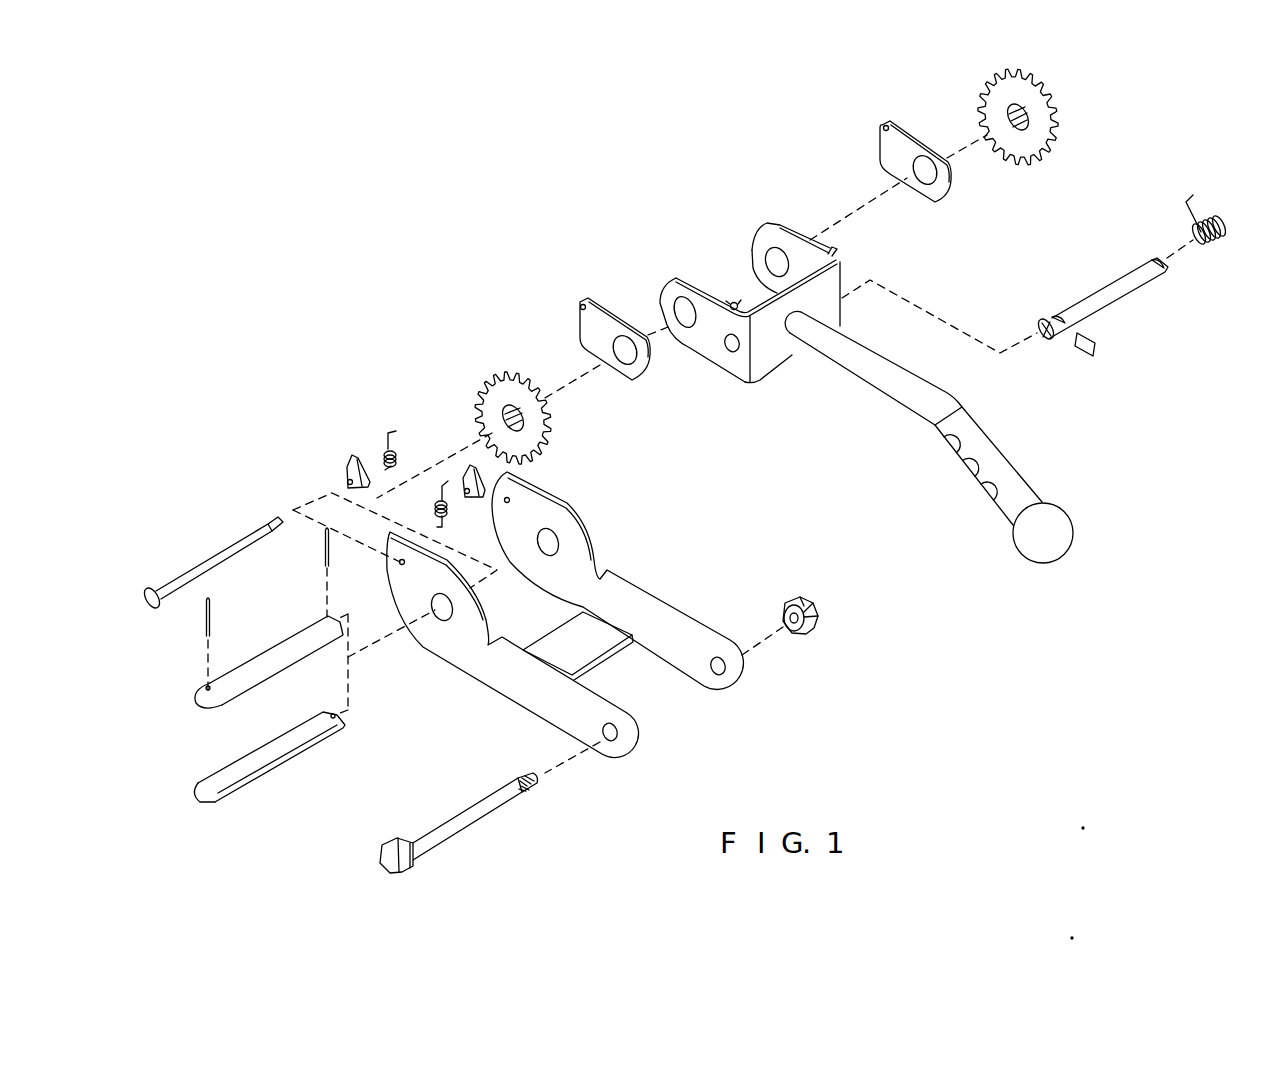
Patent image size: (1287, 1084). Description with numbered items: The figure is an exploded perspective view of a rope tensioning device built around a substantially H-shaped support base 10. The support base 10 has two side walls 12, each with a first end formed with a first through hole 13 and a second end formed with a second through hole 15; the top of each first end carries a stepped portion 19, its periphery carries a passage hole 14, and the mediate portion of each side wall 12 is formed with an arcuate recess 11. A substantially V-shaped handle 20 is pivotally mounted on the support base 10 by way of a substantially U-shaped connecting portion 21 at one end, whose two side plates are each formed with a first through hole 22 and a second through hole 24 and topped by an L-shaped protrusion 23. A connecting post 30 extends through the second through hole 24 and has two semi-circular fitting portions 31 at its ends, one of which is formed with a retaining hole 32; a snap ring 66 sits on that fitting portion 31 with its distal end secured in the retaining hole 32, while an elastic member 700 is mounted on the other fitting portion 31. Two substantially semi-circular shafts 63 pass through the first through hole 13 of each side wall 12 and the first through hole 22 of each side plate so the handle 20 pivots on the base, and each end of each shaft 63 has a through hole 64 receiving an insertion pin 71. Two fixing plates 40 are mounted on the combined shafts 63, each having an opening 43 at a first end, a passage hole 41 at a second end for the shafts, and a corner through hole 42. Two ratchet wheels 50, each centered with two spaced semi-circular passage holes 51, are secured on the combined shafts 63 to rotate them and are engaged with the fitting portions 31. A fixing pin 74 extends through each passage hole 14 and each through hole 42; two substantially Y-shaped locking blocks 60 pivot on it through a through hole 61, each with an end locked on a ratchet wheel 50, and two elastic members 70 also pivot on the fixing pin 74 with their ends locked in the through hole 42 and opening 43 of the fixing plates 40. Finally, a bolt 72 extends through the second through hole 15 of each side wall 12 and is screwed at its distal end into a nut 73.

The support base 10 is at (574, 613).
The arcuate recess 11 is at (494, 645).
The side walls 12 is at (645, 581).
The first through hole 13 is at (443, 616).
The passage hole 14 is at (400, 565).
The second through hole 15 is at (724, 668).
The stepped portion 19 is at (552, 503).
The handle 20 is at (853, 428).
The connecting portion 21 is at (742, 297).
The first through hole 22 is at (683, 302).
The L-shaped protrusion 23 is at (731, 303).
The second through hole 24 is at (730, 353).
The connecting post 30 is at (1095, 327).
The semi-circular fitting portions 31 is at (1041, 324).
The retaining hole 32 is at (1047, 340).
The fixing plates 40 is at (724, 250).
The passage hole 41 is at (626, 348).
The through hole 42 is at (582, 307).
The opening 43 is at (580, 331).
The ratchet wheels 50 is at (739, 266).
The semi-circular passage holes 51 is at (514, 406).
The locking blocks 60 is at (386, 455).
The through hole 61 is at (345, 482).
The shafts 63 is at (273, 712).
The through hole 64 is at (204, 691).
The snap ring 66 is at (1090, 357).
The elastic members 70 is at (392, 446).
The insertion pins 71 is at (324, 551).
The bolt 72 is at (473, 817).
The nut 73 is at (820, 620).
The fixing pin 74 is at (222, 552).
The elastic member 700 is at (1218, 240).